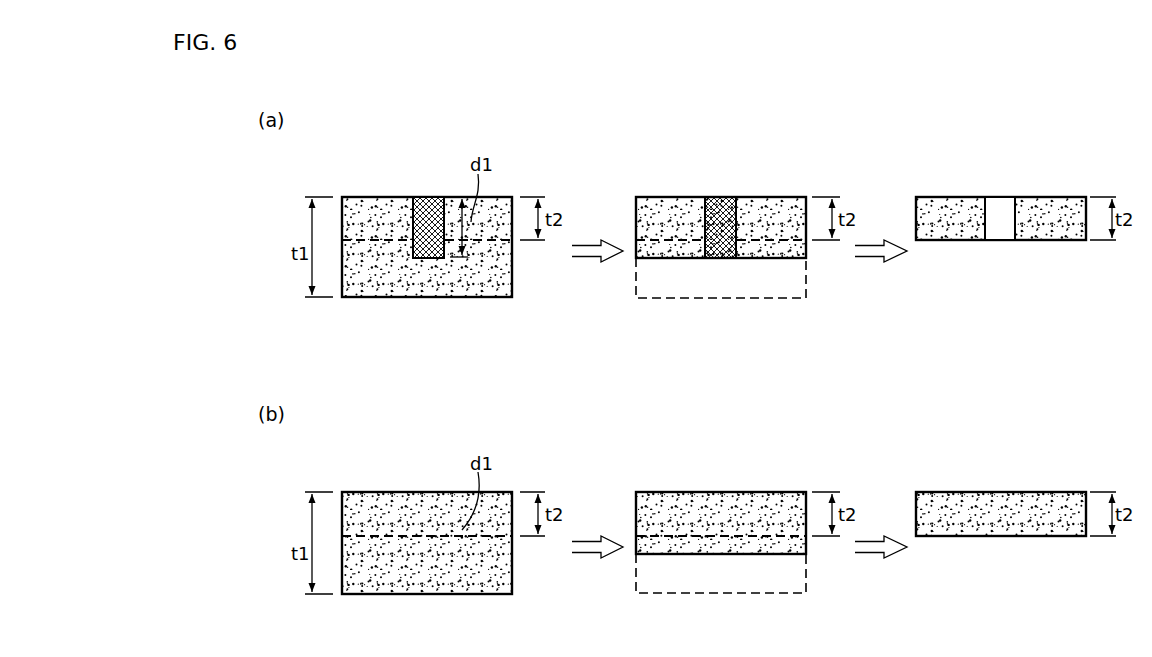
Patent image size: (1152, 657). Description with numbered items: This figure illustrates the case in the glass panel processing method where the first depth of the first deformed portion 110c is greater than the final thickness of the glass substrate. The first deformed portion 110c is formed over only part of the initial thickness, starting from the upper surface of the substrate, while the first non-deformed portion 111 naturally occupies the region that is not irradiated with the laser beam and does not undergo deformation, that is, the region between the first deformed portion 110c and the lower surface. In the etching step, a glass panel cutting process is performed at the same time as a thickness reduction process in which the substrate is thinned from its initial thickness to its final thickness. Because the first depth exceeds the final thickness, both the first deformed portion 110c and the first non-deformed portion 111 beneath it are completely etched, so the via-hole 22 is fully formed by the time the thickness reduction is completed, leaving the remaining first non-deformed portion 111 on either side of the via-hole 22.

The first non-deformed portion 111 is at (490, 273).
The first deformed portion 110c is at (426, 197).
The via-hole 22 is at (1010, 216).